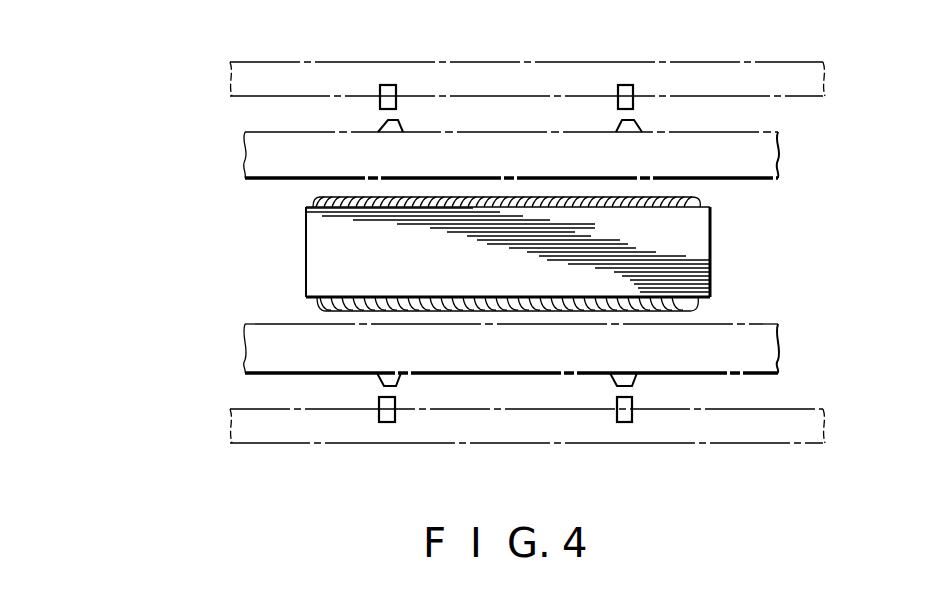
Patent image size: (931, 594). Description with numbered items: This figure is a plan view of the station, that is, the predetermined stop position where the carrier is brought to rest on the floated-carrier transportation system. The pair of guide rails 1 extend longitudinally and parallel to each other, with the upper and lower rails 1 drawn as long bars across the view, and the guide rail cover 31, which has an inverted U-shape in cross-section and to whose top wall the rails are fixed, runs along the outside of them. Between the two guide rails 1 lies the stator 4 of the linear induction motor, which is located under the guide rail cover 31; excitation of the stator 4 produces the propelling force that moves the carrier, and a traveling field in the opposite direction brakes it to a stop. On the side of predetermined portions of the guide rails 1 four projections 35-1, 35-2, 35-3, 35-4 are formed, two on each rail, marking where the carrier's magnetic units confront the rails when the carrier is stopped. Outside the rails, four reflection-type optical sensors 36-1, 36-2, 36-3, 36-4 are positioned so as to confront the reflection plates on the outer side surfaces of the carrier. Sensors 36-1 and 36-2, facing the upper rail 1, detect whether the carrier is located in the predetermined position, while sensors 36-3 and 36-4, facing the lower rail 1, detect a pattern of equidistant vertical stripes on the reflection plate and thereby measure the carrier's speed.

The guide rail cover 31 is at (777, 62).
The guide rail 1 is at (742, 324).
The stator 4 is at (712, 222).
The optical sensor 36-1 is at (389, 85).
The optical sensor 36-2 is at (626, 85).
The optical sensor 36-3 is at (387, 422).
The optical sensor 36-4 is at (624, 422).
The projection 35-1 is at (402, 124).
The projection 35-2 is at (641, 124).
The projection 35-3 is at (400, 381).
The projection 35-4 is at (636, 381).